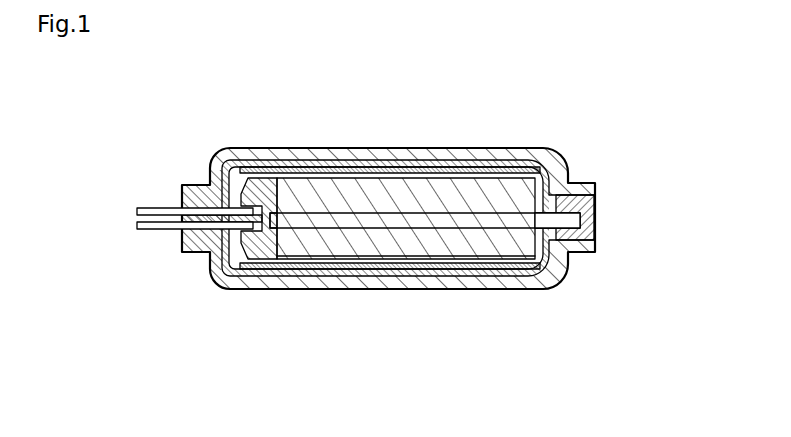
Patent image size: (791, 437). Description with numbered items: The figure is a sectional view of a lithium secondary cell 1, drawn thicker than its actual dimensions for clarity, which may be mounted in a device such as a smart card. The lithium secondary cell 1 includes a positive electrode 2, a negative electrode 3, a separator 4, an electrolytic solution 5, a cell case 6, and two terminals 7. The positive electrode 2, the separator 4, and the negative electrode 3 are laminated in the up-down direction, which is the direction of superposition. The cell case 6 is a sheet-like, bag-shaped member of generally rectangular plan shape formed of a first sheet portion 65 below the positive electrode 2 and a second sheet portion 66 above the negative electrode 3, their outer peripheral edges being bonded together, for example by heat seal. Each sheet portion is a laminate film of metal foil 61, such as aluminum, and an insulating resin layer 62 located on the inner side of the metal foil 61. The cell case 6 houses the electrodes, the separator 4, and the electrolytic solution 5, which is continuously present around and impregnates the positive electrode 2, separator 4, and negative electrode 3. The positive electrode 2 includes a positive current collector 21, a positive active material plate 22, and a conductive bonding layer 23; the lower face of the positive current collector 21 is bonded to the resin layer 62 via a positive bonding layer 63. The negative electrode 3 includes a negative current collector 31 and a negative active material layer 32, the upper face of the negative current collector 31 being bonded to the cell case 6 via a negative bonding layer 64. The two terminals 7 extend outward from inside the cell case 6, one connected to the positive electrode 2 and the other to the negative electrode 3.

The lithium secondary cell 1 is at (162, 90).
The positive electrode 2 is at (406, 318).
The positive current collector 21 is at (322, 272).
The positive active material plate 22 is at (382, 270).
The conductive bonding layer 23 is at (348, 269).
The negative electrode 3 is at (425, 161).
The negative current collector 31 is at (327, 177).
The negative active material layer 32 is at (367, 192).
The separator 4 is at (582, 206).
The electrolytic solution 5 is at (263, 204).
The cell case 6 is at (395, 218).
The metal foil 61 is at (471, 156).
The resin layer 62 is at (499, 164).
The positive bonding layer 63 is at (453, 287).
The negative bonding layer 64 is at (457, 168).
The first sheet portion 65 is at (521, 338).
The second sheet portion 66 is at (519, 102).
The terminals 7 is at (163, 207).